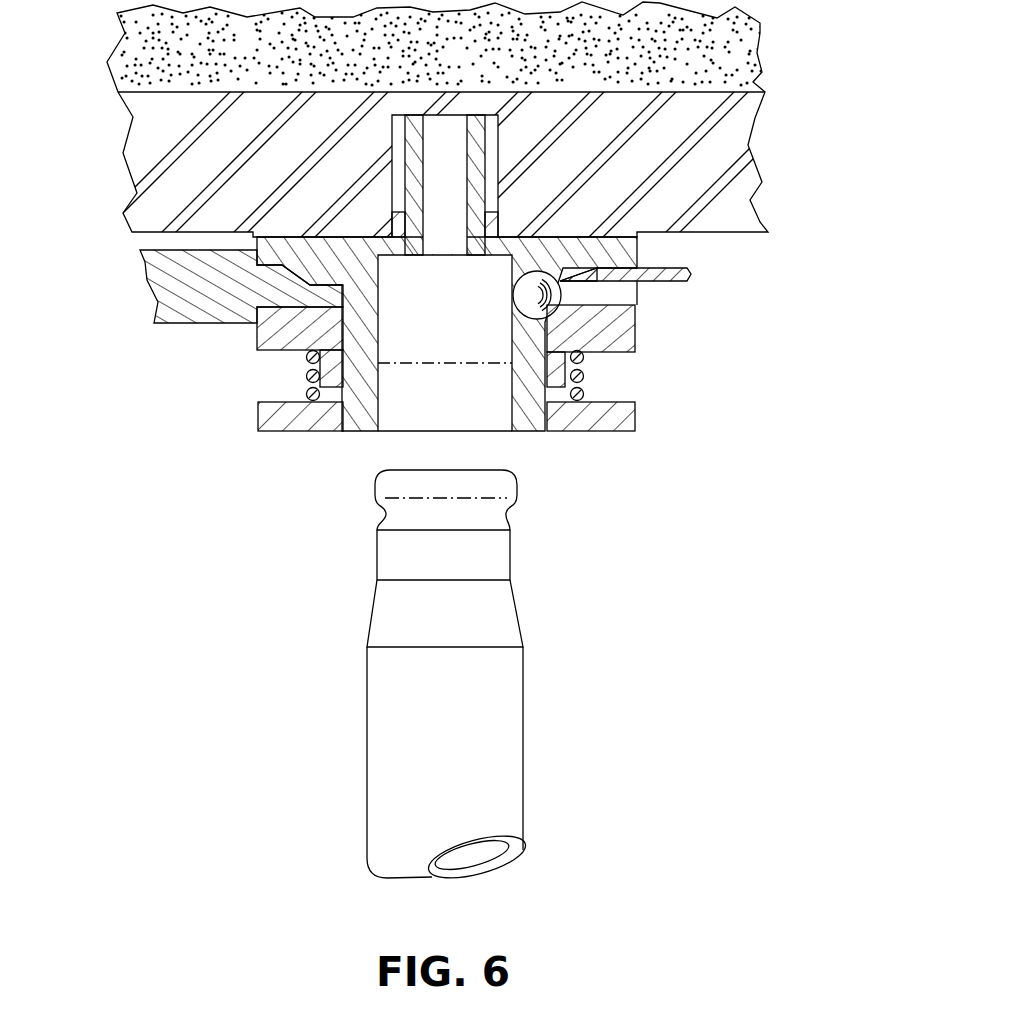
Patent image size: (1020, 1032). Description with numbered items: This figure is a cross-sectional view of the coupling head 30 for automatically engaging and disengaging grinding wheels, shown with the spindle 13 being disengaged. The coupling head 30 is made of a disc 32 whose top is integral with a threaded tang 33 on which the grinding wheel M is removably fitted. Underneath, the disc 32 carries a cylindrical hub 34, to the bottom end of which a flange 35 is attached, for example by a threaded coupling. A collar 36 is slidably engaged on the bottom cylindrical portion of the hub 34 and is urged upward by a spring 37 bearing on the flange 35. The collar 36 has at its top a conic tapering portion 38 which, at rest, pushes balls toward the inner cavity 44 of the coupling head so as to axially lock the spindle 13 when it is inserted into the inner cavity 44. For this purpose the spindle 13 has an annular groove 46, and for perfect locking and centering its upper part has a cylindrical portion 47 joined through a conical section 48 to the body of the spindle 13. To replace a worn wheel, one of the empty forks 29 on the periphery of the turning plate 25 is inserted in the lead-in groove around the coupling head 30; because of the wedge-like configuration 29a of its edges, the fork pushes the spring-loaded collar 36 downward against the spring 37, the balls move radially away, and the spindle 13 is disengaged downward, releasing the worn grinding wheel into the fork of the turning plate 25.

The grinding wheel M is at (740, 128).
The spindle 13 is at (503, 678).
The turning plate 25 is at (163, 274).
The fork-like recess 29 is at (690, 273).
The wedge-like configuration 29a is at (562, 287).
The coupling head 30 is at (648, 321).
The disc 32 is at (637, 248).
The threaded tang 33 is at (475, 178).
The cylindrical hub 34 is at (512, 362).
The flange 35 is at (277, 412).
The collar 36 is at (280, 333).
The spring 37 is at (583, 377).
The conic tapering portion 38 is at (550, 325).
The inner cavity 44 is at (413, 435).
The annular groove 46 is at (487, 512).
The cylindrical portion 47 is at (488, 553).
The conical section 48 is at (492, 612).